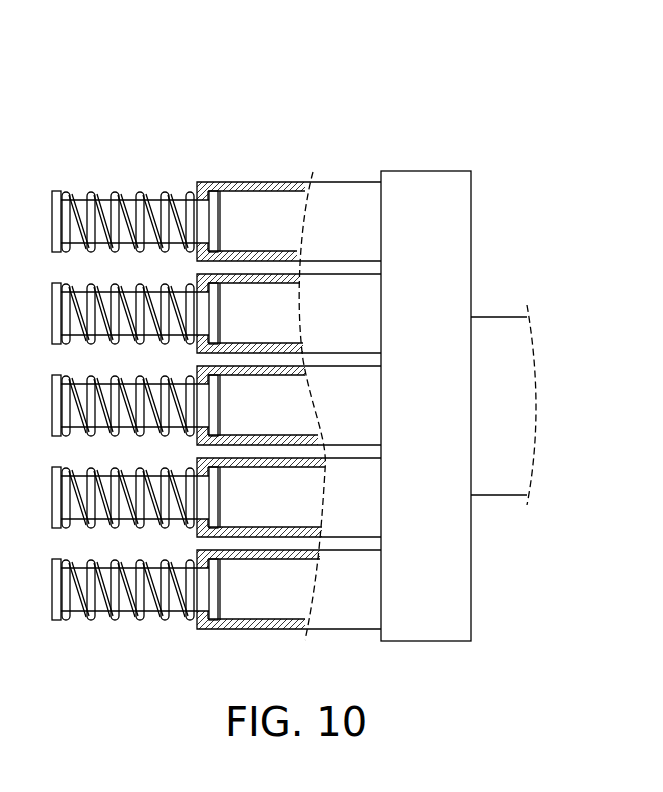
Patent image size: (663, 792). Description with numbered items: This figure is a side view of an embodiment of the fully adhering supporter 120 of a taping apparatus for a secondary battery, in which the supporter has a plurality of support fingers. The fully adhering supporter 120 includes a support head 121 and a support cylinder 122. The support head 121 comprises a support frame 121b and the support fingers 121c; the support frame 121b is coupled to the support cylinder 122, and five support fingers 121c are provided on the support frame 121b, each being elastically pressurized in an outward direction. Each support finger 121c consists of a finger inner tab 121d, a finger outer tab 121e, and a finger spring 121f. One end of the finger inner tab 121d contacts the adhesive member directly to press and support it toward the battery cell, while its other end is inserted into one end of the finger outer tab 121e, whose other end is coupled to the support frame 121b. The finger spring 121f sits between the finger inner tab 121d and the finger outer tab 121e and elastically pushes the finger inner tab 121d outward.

The fully adhering supporter 120 is at (527, 40).
The support head 121 is at (415, 79).
The support frame 121b is at (416, 183).
The support finger 121c is at (283, 117).
The finger inner tab 121d is at (103, 190).
The finger outer tab 121e is at (250, 186).
The finger spring 121f is at (165, 190).
The support cylinder 122 is at (500, 312).